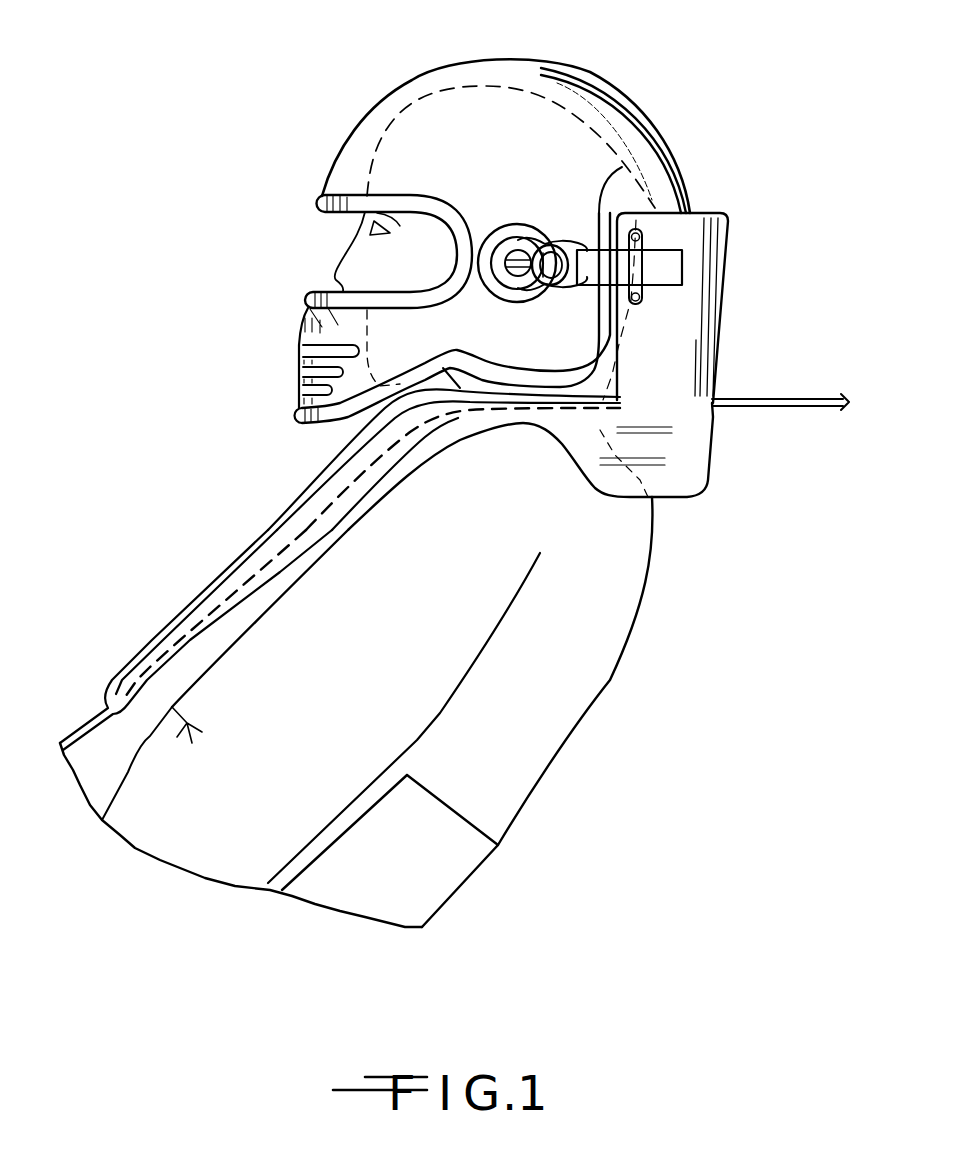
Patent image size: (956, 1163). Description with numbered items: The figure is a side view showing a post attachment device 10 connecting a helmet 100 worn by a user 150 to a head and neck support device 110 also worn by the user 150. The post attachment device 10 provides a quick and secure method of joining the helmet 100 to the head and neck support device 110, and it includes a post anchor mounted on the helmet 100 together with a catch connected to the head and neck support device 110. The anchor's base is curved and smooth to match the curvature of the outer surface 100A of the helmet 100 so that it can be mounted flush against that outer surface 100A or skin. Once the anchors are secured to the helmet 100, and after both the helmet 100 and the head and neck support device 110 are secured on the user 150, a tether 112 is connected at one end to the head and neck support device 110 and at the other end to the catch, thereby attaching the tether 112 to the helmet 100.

The helmet 100 is at (438, 82).
The outer surface 100A is at (558, 62).
The post attachment device 10 is at (559, 230).
The tether 112 is at (622, 167).
The head and neck support device 110 is at (722, 232).
The user 150 is at (598, 540).